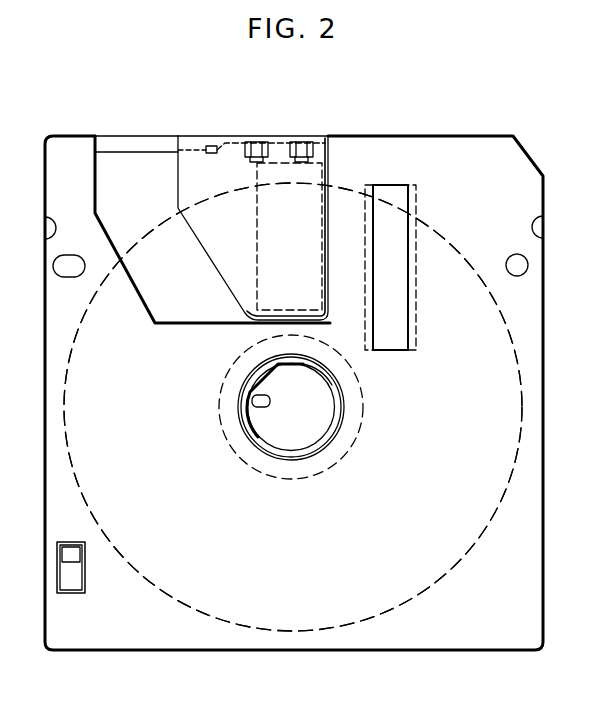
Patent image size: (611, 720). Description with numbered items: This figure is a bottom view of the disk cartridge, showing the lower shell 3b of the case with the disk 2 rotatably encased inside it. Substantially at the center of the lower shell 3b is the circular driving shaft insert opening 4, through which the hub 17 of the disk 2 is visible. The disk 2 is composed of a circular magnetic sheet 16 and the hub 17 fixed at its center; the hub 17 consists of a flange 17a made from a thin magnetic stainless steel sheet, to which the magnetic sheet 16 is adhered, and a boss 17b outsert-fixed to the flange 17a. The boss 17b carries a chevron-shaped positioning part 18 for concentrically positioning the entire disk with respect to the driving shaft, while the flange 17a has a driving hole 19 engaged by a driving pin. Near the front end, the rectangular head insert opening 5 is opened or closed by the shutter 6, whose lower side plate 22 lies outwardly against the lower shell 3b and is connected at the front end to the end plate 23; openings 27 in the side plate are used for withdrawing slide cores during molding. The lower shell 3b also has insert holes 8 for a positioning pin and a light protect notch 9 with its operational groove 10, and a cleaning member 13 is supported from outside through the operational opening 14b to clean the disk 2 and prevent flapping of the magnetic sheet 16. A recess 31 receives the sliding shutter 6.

The disk 2 is at (520, 363).
The lower shell 3b is at (532, 540).
The driving shaft insert opening 4 is at (282, 453).
The head insert opening 5 is at (247, 312).
The shutter 6 is at (319, 128).
The insert holes for a positioning pin 8 is at (60, 262).
The light protect notch 9 is at (68, 555).
The write-protect opening 10 is at (72, 588).
The cleaning member 13 is at (418, 320).
The operational opening 14b is at (400, 278).
The magnetic sheet 16 is at (236, 615).
The hub 17 is at (270, 432).
The flange 17a is at (365, 412).
The boss 17b is at (318, 433).
The positioning part 18 is at (306, 370).
The driving hole 19 is at (257, 403).
The lower side plate 22 is at (215, 250).
The end plate 23 is at (190, 137).
The openings 27 is at (212, 146).
The shutter receiving recess 31 is at (165, 298).